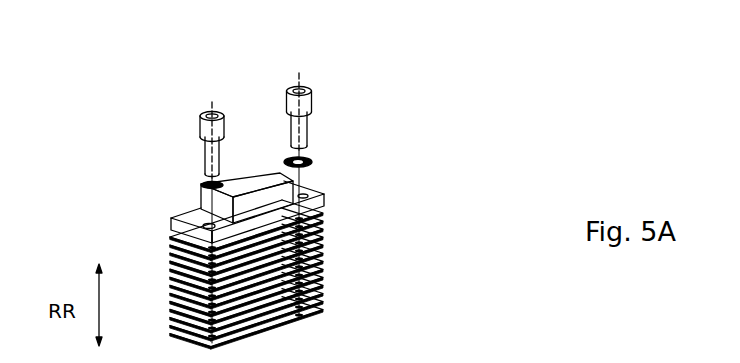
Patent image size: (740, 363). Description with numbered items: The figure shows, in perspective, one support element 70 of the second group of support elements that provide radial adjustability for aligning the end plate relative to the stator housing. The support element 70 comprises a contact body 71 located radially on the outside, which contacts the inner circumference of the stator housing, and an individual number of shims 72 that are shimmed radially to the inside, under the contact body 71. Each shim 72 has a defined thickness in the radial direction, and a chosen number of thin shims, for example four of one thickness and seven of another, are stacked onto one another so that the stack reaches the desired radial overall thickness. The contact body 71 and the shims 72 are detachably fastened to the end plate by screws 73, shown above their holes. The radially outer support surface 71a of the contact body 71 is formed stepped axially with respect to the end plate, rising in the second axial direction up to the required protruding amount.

The support element 70 is at (120, 206).
The contact body 71 is at (282, 193).
The support surface 71a is at (250, 176).
The shims 72 is at (340, 268).
The screws 73 is at (323, 100).